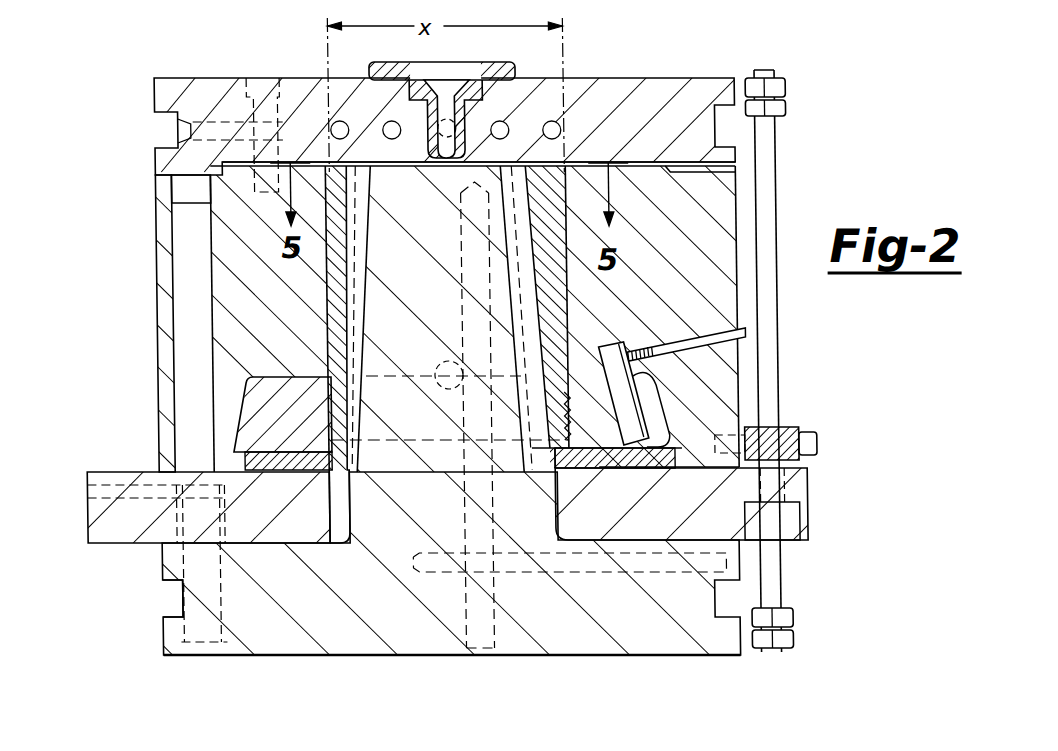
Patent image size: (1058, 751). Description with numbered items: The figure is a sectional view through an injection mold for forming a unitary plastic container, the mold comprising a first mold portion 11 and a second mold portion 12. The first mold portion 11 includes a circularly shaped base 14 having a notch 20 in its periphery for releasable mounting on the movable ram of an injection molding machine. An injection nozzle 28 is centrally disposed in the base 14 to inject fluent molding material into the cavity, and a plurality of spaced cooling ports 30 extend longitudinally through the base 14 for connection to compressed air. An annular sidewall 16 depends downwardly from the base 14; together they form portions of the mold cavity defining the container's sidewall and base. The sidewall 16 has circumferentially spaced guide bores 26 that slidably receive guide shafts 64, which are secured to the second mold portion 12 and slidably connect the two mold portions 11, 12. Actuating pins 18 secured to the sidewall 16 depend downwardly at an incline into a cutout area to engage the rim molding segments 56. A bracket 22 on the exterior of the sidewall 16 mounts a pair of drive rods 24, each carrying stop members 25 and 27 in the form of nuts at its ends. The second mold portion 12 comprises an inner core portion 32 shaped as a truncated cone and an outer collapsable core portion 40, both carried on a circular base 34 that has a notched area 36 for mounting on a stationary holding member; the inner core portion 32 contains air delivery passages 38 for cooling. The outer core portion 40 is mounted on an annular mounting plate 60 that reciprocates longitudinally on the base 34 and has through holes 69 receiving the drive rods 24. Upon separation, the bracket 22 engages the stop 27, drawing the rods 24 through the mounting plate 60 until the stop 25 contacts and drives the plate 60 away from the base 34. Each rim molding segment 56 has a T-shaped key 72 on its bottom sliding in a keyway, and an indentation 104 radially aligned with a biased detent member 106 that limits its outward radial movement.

The first mold portion 11 is at (698, 88).
The second mold portion 12 is at (427, 585).
The base 14 is at (632, 131).
The sidewall 16 is at (223, 263).
The actuating pins 18 is at (655, 345).
The notch 20 is at (732, 128).
The bracket 22 is at (790, 427).
The drive rods 24 is at (770, 178).
The stop member 25 is at (790, 617).
The guide bores 26 is at (200, 183).
The stop member 27 is at (788, 86).
The injection nozzle 28 is at (462, 88).
The cooling ports 30 is at (507, 124).
The inner core portion 32 is at (428, 296).
The base 34 is at (452, 663).
The notched area 36 is at (168, 600).
The air delivery passages 38 is at (462, 492).
The outer collapsable core portion 40 is at (560, 317).
The rim molding segments 56 is at (258, 413).
The mounting plate 60 is at (797, 487).
The guide shafts 64 is at (183, 243).
The through holes 69 is at (790, 540).
The T-shaped key 72 is at (645, 465).
The indentation 104 is at (632, 393).
The detent member 106 is at (610, 450).